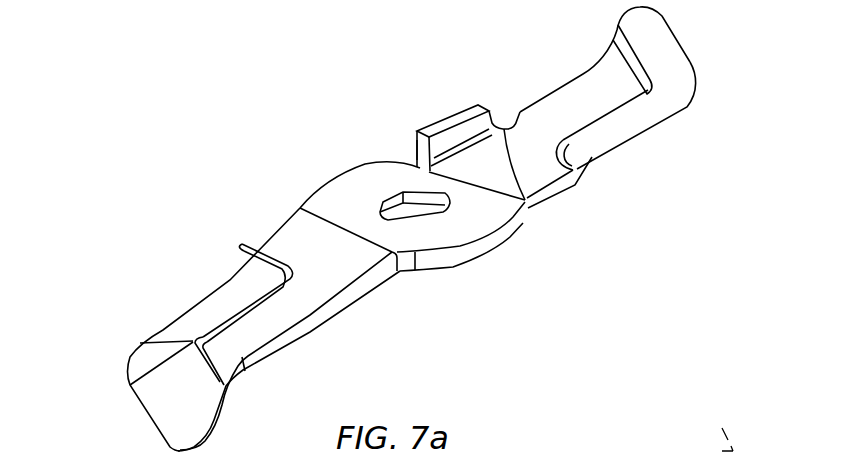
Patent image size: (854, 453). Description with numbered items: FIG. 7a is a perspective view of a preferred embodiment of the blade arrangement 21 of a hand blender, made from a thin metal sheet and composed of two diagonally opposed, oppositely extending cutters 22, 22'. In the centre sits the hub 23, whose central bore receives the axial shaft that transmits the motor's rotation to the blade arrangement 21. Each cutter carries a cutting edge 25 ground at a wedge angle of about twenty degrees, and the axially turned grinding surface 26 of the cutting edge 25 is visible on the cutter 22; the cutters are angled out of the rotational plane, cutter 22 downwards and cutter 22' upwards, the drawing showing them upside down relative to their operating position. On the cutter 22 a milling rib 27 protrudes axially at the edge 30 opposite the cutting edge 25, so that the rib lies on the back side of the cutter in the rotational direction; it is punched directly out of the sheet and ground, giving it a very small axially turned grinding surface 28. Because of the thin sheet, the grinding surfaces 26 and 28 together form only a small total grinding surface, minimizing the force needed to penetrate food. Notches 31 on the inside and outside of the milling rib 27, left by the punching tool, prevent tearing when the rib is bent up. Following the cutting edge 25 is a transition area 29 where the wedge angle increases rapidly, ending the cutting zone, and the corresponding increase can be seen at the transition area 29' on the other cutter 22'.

The blade arrangement 21 is at (174, 193).
The cutter 22 is at (584, 108).
The cutter 22' is at (264, 329).
The hub 23 is at (332, 190).
The cutting edge 25 is at (673, 112).
The grinding surface 26 is at (668, 62).
The milling rib 27 is at (415, 143).
The grinding surface 28 is at (448, 120).
The transition area 29 is at (605, 171).
The transition area 29' is at (242, 313).
The edge 30 is at (530, 100).
The notches 31 is at (433, 163).